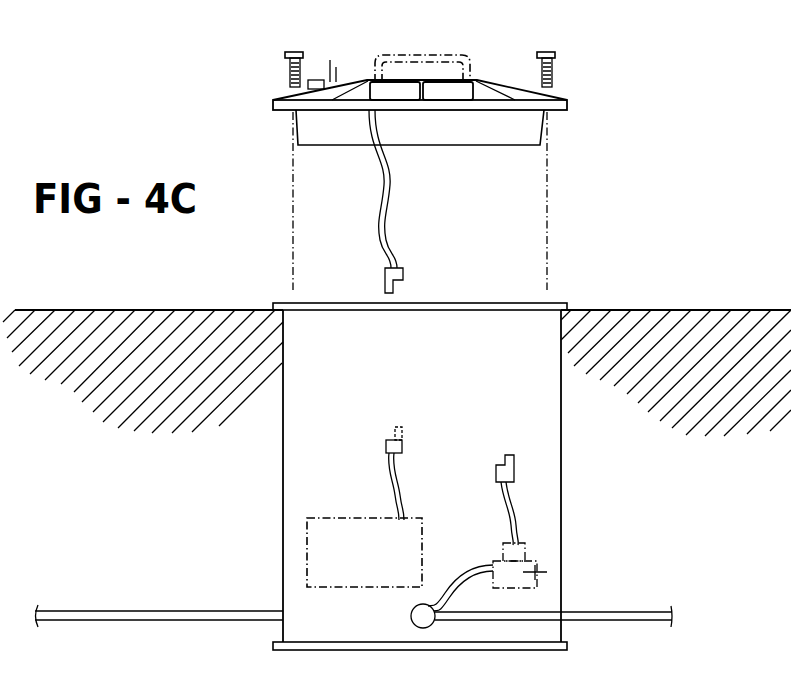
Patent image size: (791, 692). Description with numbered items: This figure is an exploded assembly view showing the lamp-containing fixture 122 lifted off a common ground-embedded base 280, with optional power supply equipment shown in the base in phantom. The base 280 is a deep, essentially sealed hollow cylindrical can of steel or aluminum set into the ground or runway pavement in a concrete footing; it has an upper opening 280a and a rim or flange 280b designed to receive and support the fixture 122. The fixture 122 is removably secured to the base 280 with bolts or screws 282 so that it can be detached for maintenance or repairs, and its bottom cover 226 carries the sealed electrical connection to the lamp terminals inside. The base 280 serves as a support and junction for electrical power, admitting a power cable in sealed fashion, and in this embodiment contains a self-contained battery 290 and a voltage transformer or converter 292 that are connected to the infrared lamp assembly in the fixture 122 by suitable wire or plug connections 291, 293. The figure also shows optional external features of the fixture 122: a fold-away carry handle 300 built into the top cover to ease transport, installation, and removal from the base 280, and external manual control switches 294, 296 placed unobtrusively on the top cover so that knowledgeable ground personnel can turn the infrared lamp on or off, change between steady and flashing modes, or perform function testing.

The fixture 122 is at (497, 67).
The bottom cover 226 is at (532, 127).
The bolts or screws 282 is at (286, 55).
The external manual control switch 296 is at (316, 78).
The external manual control switch 294 is at (335, 62).
The fold-away carry handle 300 is at (442, 52).
The upper opening 280a is at (437, 303).
The rim or flange 280b is at (556, 306).
The base 280 is at (562, 418).
The self-contained battery 290 is at (352, 526).
The connector 291 is at (400, 440).
The connector 293 is at (495, 470).
The voltage transformer or converter 292 is at (548, 572).